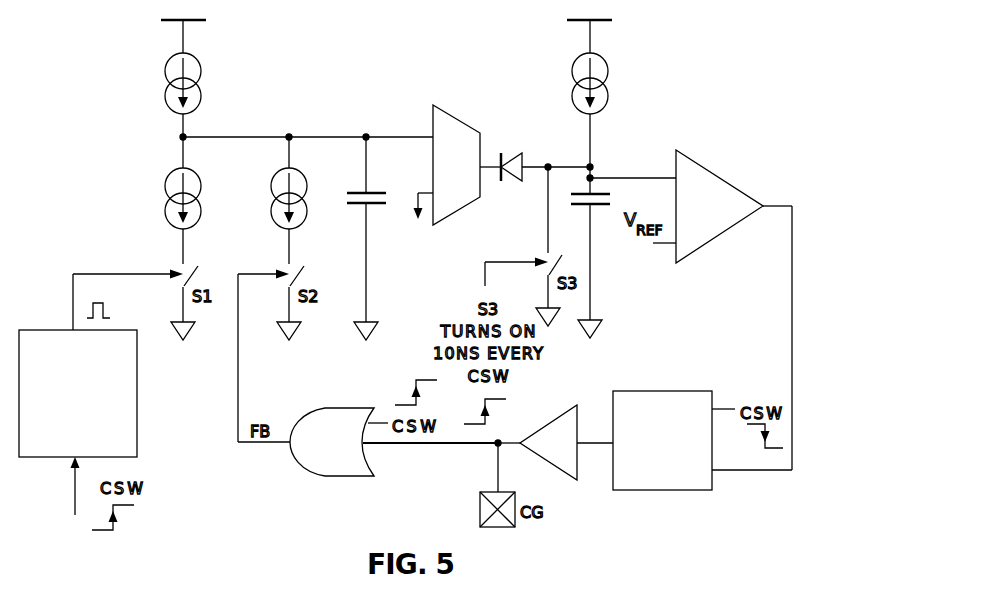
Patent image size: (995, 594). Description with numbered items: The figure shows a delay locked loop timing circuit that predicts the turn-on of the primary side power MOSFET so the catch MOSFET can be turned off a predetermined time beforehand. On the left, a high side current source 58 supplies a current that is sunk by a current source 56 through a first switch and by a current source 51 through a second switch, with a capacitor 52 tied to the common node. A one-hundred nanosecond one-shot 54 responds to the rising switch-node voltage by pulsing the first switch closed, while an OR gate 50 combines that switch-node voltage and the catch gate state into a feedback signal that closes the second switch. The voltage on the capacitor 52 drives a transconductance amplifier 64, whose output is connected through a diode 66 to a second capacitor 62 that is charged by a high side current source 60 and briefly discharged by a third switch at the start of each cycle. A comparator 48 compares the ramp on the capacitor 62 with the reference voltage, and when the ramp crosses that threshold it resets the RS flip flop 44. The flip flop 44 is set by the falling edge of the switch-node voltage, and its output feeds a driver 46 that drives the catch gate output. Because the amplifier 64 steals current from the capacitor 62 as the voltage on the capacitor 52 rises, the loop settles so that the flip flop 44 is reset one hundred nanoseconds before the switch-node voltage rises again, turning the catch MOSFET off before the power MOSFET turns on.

The RS flip flop 44 is at (645, 390).
The driver 46 is at (556, 421).
The comparator 48 is at (728, 179).
The OR gate 50 is at (351, 477).
The current source 51 is at (271, 188).
The capacitor 52 is at (378, 207).
The 100 ns one-shot 54 is at (138, 406).
The current source 56 is at (165, 188).
The high side current source 58 is at (165, 70).
The high side current source 60 is at (572, 70).
The capacitor 62 is at (602, 208).
The transconductance (gm) amplifier 64 is at (457, 118).
The diode 66 is at (504, 154).